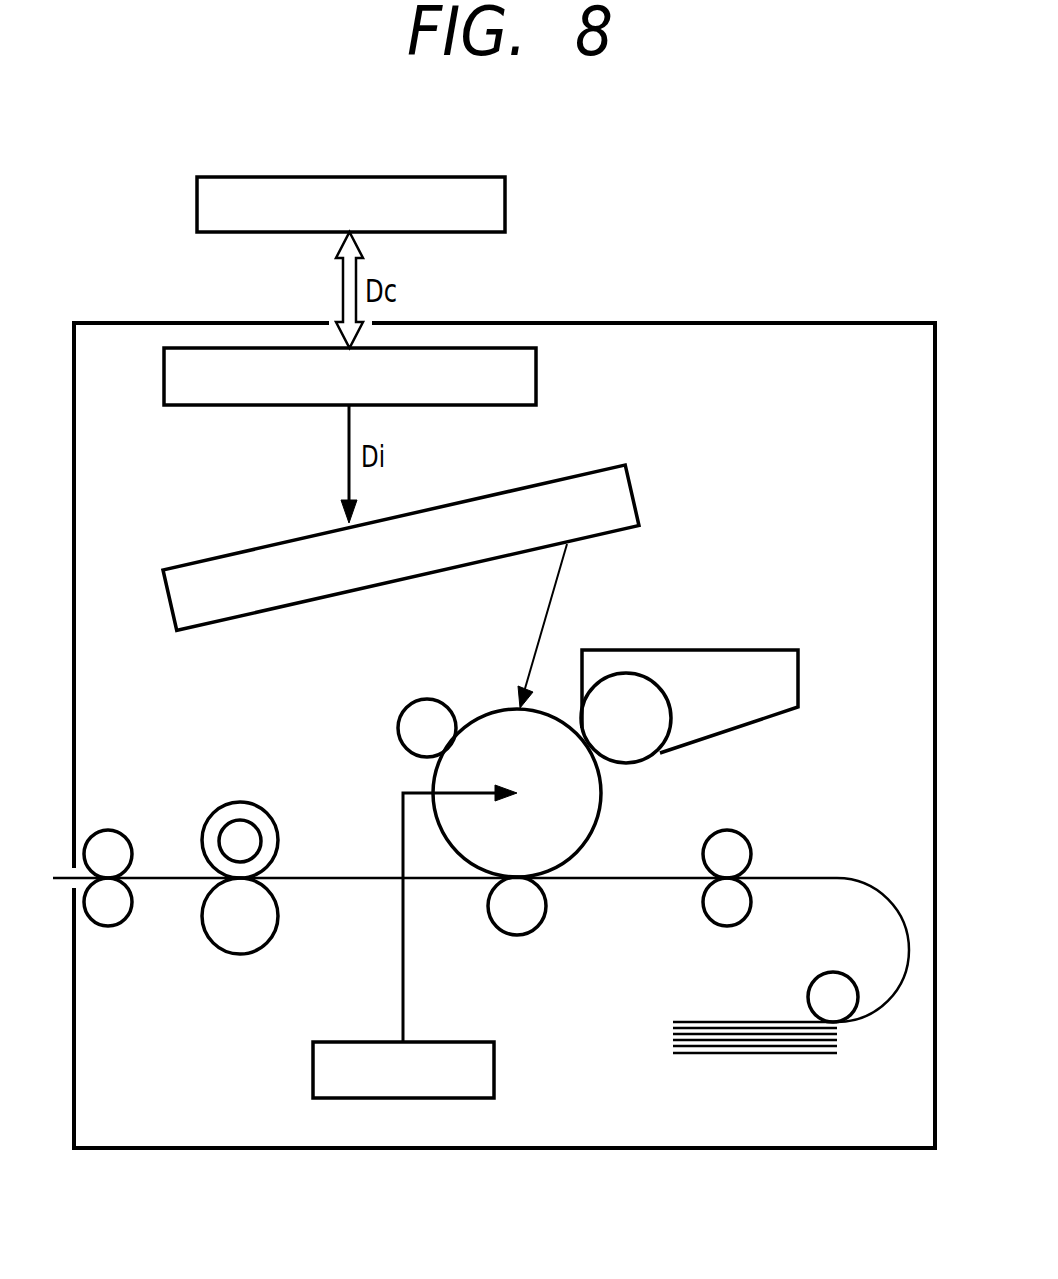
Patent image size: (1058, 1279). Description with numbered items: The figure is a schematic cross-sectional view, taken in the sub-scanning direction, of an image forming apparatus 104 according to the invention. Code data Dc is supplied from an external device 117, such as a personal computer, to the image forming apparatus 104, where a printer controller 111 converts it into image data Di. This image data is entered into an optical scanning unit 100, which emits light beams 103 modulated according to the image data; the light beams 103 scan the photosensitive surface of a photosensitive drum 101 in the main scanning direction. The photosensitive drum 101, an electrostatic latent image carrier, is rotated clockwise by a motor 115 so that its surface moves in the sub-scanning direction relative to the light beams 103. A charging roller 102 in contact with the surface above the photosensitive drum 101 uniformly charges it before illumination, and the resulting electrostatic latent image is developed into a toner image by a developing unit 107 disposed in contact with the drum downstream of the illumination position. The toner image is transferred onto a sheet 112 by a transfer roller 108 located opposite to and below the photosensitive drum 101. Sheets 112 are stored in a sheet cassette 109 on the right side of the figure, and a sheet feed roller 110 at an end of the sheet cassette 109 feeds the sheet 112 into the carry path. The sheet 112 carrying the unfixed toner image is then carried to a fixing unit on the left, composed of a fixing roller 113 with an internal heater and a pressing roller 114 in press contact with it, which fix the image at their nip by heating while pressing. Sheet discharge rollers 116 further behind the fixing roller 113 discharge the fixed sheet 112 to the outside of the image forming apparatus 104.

The optical scanning unit 100 is at (228, 556).
The photosensitive drum 101 is at (588, 812).
The charging roller 102 is at (416, 707).
The light beams 103 is at (551, 605).
The image forming apparatus 104 is at (695, 323).
The developing unit 107 is at (725, 648).
The transfer roller 108 is at (537, 905).
The sheet cassette 109 is at (750, 1057).
The sheet feed roller 110 is at (838, 975).
The printer controller 111 is at (536, 395).
The sheet 112 is at (368, 877).
The fixing roller 113 is at (253, 813).
The pressing roller 114 is at (235, 943).
The motor 115 is at (445, 1042).
The sheet discharge rollers 116 is at (112, 840).
The external device 117 is at (468, 175).